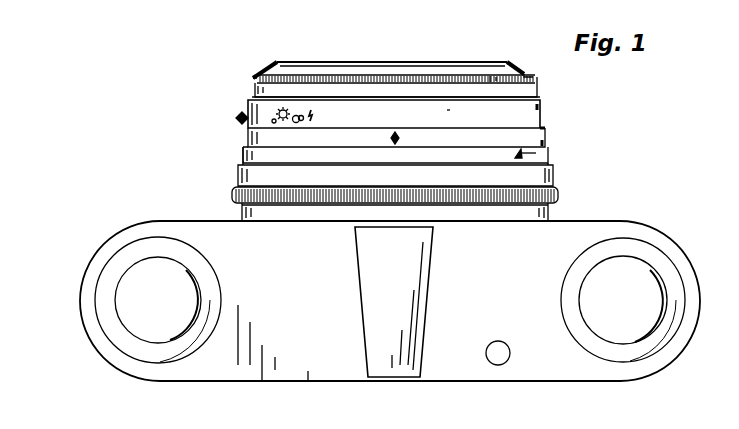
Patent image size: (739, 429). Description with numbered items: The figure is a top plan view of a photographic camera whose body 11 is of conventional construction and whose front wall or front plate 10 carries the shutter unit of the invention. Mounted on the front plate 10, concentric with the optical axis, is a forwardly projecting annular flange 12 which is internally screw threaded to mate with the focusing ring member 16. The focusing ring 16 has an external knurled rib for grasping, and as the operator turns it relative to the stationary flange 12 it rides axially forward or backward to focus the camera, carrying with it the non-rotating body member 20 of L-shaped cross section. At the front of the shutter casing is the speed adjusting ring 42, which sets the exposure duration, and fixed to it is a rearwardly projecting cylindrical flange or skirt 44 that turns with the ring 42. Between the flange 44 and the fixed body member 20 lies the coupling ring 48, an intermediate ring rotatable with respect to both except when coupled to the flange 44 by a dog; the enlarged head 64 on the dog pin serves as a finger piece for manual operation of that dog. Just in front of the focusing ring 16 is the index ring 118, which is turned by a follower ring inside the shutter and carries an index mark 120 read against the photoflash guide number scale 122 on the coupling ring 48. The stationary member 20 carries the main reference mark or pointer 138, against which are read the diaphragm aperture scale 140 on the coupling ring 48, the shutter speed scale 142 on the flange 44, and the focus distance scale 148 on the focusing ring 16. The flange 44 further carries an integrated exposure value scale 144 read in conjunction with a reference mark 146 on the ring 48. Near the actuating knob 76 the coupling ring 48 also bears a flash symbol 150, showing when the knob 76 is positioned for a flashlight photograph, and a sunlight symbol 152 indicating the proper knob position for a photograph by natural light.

The front wall 10 is at (567, 222).
The photographic camera body 11 is at (262, 371).
The annular flange 12 is at (242, 213).
The focusing ring member 16 is at (240, 173).
The body member 20 is at (252, 137).
The speed adjusting ring 42 is at (260, 75).
The cylindrical flange 44 is at (256, 84).
The coupling ring 48 is at (252, 103).
The enlarged head 64 is at (236, 118).
The actuating knob 76 is at (298, 123).
The index ring 118 is at (242, 158).
The index mark 120 is at (549, 153).
The guide number scale 122 is at (540, 120).
The main reference mark 138 is at (401, 138).
The diaphragm aperture scale 140 is at (447, 110).
The shutter speed scale 142 is at (490, 90).
The integrated exposure value scale 144 is at (538, 89).
The reference mark 146 is at (541, 107).
The focus distance scale 148 is at (332, 174).
The flash symbol 150 is at (313, 118).
The sunlight symbol 152 is at (283, 120).